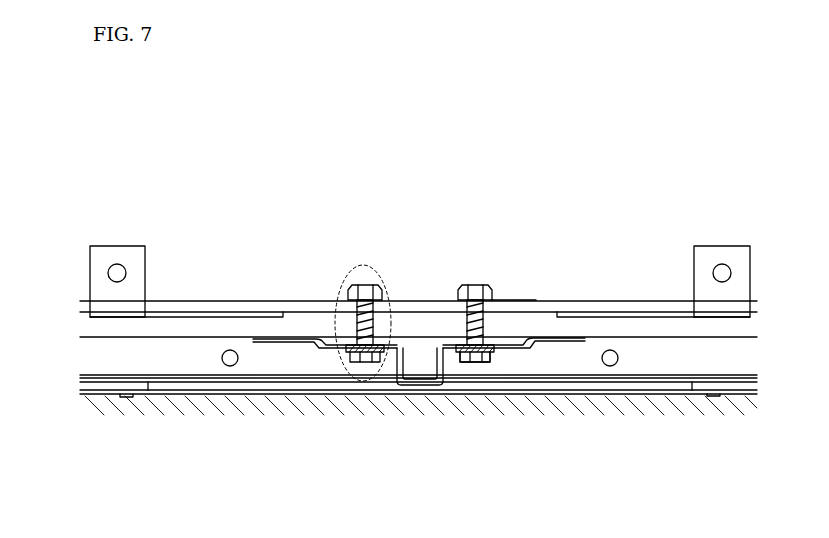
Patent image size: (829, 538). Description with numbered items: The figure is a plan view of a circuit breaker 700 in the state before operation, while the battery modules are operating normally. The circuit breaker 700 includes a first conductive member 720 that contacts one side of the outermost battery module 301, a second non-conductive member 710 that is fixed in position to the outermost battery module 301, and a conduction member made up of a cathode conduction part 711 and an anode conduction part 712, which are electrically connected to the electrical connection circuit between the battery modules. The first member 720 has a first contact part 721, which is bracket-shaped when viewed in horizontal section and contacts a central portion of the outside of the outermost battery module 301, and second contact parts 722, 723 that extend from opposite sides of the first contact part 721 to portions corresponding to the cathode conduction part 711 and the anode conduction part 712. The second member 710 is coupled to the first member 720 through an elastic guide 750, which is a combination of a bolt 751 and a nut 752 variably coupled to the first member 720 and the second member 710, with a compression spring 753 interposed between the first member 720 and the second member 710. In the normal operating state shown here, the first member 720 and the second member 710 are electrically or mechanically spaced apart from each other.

The circuit breaker 700 is at (112, 119).
The outermost battery module 301 is at (656, 408).
The second member 710 is at (243, 297).
The cathode conduction part 711 is at (713, 260).
The anode conduction part 712 is at (137, 258).
The first member 720 is at (393, 378).
The first contact part 721 is at (420, 382).
The second contact part 722 is at (568, 339).
The second contact part 723 is at (280, 339).
The elastic guide 750 is at (370, 263).
The bolt 751 is at (472, 285).
The nut 752 is at (478, 352).
The compression spring 753 is at (495, 298).